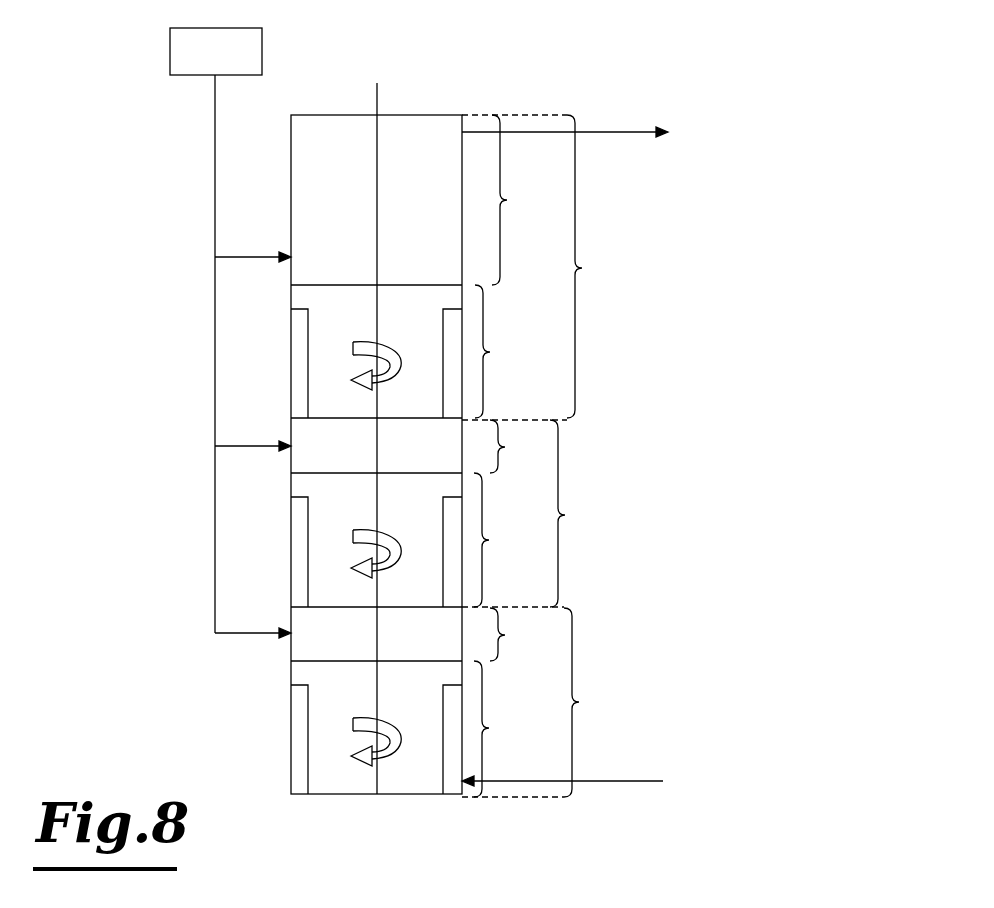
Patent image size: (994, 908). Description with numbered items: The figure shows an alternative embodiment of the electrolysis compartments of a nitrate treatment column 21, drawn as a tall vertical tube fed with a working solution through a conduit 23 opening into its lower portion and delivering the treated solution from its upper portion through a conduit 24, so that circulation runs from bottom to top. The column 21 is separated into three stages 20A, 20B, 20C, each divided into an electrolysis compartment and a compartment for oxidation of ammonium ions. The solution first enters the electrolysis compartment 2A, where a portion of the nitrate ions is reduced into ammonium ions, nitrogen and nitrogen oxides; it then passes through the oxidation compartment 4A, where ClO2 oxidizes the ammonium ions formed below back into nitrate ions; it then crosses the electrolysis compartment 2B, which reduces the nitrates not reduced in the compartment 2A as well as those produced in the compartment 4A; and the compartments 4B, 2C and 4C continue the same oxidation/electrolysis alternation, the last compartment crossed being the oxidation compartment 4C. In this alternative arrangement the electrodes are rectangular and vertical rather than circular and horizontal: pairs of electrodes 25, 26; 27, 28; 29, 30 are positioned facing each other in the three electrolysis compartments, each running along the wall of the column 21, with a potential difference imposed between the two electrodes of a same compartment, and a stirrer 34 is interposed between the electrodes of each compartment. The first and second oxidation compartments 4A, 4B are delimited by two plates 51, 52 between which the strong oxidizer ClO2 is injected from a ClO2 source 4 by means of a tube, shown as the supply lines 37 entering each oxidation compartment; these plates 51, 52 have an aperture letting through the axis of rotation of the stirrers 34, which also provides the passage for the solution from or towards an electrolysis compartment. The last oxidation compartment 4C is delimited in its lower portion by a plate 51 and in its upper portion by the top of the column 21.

The ClO2 source 4 is at (216, 330).
The nitrate treatment column 21 is at (421, 115).
The conduit 23 is at (615, 784).
The conduit 24 is at (620, 130).
The electrode 25 is at (291, 727).
The electrode 26 is at (440, 780).
The electrode 27 is at (293, 539).
The electrode 28 is at (441, 590).
The electrode 29 is at (293, 352).
The electrode 30 is at (443, 402).
The stirrer 34 is at (385, 342).
The supply line from control unit 37 is at (254, 256).
The plate 51 is at (333, 283).
The plate 52 is at (418, 420).
The electrolysis compartment 2A is at (499, 729).
The electrolysis compartment 2B is at (499, 540).
The electrolysis compartment 2C is at (500, 351).
The oxidation compartment 4A is at (515, 634).
The oxidation compartment 4B is at (515, 446).
The oxidation compartment 4C is at (517, 200).
The stage 20A is at (597, 702).
The stage 20B is at (583, 513).
The stage 20C is at (600, 266).